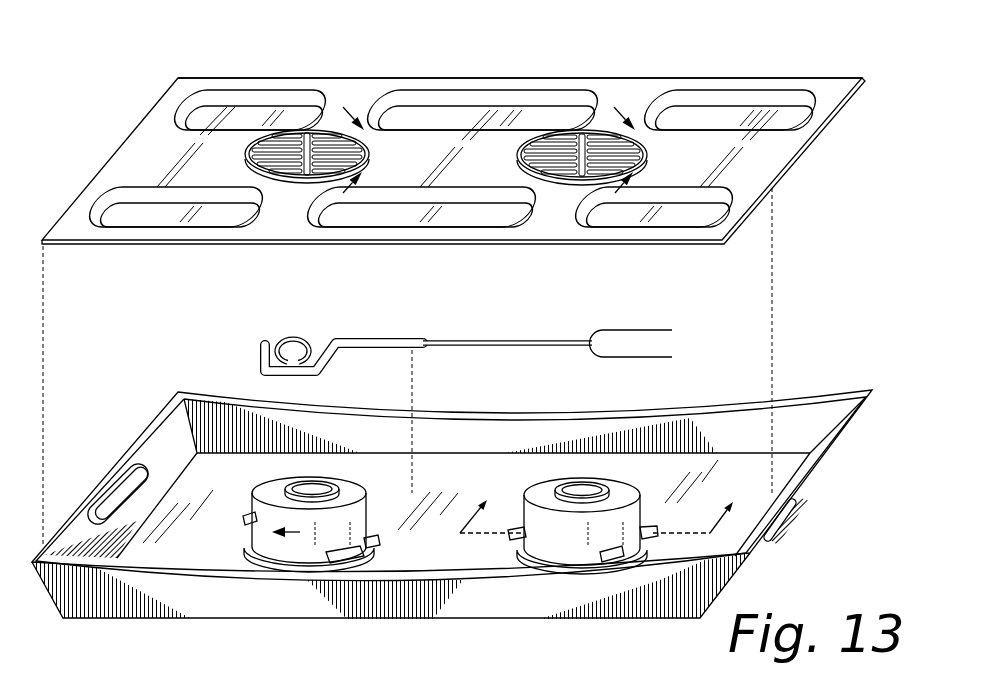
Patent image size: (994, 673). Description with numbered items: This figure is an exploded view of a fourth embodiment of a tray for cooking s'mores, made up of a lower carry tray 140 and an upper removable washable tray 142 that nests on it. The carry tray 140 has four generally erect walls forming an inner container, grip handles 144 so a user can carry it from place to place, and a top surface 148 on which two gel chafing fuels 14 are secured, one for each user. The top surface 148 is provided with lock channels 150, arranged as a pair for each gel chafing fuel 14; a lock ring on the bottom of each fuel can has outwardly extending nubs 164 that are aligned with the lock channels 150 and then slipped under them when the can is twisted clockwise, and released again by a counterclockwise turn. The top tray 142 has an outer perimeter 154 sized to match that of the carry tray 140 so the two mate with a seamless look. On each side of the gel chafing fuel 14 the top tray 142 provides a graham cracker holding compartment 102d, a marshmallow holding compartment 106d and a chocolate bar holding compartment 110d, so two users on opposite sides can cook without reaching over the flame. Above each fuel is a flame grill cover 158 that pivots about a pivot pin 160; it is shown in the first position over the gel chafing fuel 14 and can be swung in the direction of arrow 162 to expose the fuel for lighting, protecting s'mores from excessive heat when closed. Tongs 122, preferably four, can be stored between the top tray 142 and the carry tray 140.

The gel chafing fuel 14 is at (233, 487).
The graham cracker holding compartment 102d is at (248, 113).
The marshmallow holding compartment 106d is at (712, 113).
The chocolate bar holding compartment 110d is at (452, 113).
The tongs 122 is at (318, 324).
The carry tray 140 is at (157, 389).
The removable washable tray 142 is at (806, 160).
The grip handles 144 is at (130, 483).
The top surface 148 is at (462, 564).
The lock channels 150 is at (525, 500).
The outer perimeter 154 is at (280, 78).
The flame grill cover 158 is at (568, 124).
The pivot pin 160 is at (247, 153).
The arrow 162 is at (371, 148).
The nubs 164 is at (650, 527).